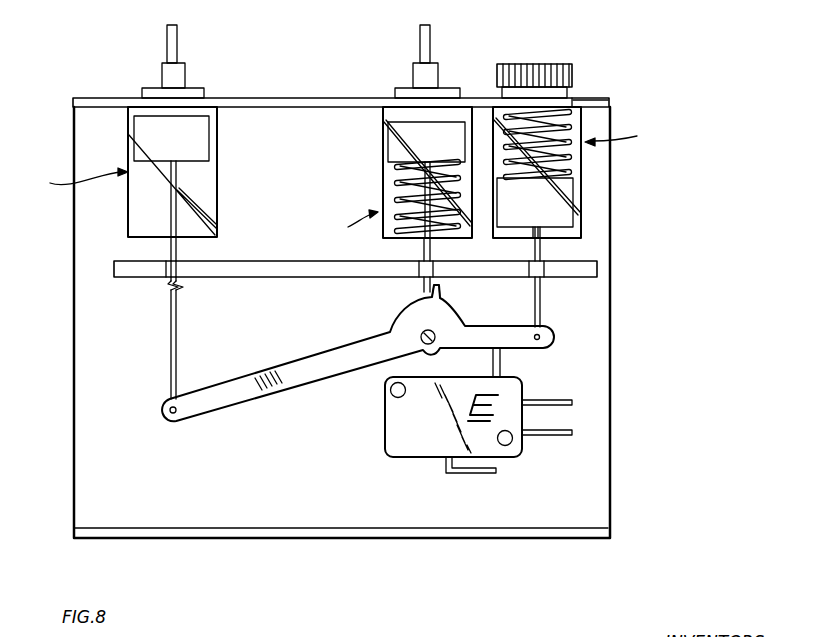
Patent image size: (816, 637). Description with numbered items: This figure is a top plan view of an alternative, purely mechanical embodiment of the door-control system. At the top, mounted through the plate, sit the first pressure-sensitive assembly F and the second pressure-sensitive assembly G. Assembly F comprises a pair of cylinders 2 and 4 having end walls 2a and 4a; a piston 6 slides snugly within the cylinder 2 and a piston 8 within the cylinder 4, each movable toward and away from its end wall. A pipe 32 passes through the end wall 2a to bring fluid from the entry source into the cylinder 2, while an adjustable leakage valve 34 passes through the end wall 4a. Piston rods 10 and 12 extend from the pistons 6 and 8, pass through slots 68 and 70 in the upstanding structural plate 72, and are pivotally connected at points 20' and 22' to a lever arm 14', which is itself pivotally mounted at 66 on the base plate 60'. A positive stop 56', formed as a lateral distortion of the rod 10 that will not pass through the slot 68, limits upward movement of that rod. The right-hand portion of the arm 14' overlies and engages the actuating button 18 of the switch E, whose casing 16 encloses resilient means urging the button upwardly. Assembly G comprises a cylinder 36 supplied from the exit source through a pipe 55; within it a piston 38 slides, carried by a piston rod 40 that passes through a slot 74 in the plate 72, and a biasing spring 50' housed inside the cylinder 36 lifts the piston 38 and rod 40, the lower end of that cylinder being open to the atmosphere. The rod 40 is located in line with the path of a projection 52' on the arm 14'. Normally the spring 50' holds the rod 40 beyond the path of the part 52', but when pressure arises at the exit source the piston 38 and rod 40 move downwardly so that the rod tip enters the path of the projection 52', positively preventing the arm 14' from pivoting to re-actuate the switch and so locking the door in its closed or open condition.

The cylinder 2 is at (218, 185).
The end wall 2a is at (203, 108).
The cylinder 4 is at (582, 167).
The end wall 4a is at (575, 100).
The piston 6 is at (204, 135).
The piston 8 is at (574, 220).
The piston rod 10 is at (171, 363).
The piston rod 12 is at (542, 307).
The lever arm 14' is at (358, 353).
The switch casing 16 is at (392, 427).
The actuating button 18 is at (503, 362).
The pivotal connection point 20' is at (194, 434).
The pivotal connection point 22' is at (562, 352).
The pipe 32 is at (177, 38).
The adjustable leakage valve 34 is at (547, 63).
The cylinder 36 is at (383, 156).
The piston 38 is at (412, 128).
The piston rod 40 is at (431, 251).
The biasing spring 50' is at (392, 196).
The projection 52' is at (462, 297).
The pipe 55 is at (427, 50).
The positive stop 56' is at (202, 294).
The base plate 60' is at (371, 322).
The pivot 66 is at (423, 336).
The slot 68 is at (165, 268).
The slot 70 is at (545, 272).
The structural plate 72 is at (272, 262).
The slot 74 is at (418, 270).
The first pressure-sensitive assembly F is at (344, 155).
The second pressure-sensitive assembly G is at (352, 214).